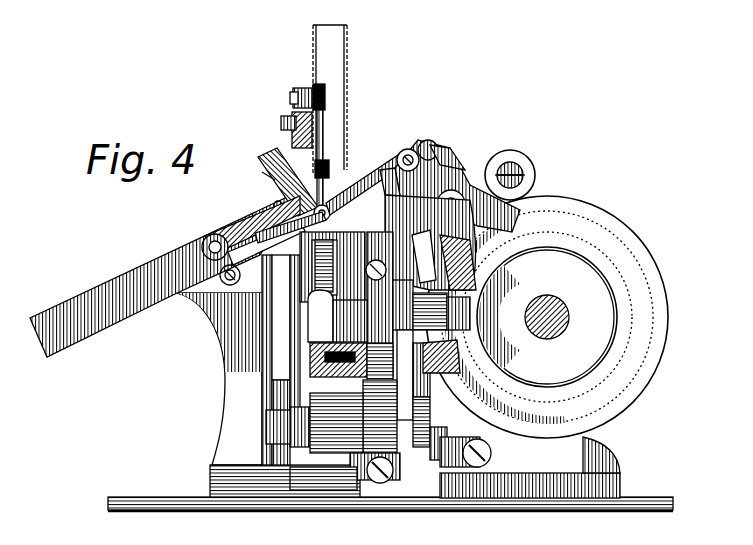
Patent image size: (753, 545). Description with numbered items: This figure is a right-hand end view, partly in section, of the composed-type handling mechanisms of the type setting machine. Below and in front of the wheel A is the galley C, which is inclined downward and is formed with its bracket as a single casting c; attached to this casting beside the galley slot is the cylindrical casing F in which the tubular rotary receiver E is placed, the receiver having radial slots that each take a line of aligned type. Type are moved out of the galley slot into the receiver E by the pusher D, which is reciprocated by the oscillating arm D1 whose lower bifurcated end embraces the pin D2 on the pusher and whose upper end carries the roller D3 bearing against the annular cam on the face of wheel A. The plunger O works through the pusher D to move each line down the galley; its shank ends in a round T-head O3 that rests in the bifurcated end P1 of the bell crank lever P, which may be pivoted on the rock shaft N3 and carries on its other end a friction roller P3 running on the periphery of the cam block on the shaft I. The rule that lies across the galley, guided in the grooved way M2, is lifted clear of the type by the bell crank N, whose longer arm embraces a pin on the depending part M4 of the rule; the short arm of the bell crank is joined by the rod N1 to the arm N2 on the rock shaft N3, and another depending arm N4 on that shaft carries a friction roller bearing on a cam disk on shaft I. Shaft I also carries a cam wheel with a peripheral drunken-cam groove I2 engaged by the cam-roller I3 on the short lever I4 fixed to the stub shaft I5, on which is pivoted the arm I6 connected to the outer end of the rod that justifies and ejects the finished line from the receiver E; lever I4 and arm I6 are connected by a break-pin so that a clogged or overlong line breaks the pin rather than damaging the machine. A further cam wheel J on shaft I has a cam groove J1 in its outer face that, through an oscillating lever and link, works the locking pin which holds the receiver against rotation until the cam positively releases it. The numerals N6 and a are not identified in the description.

The wheel A is at (336, 68).
The pusher D is at (320, 168).
The oscillating arm D1 is at (300, 107).
The pin D2 is at (300, 168).
The roller D3 is at (326, 98).
The galley C is at (165, 274).
The casting c is at (240, 330).
The cylindrical casing F is at (278, 204).
The bell crank N is at (245, 232).
The rod N1 is at (380, 170).
The arm N2 is at (476, 156).
The rock shaft N3 is at (503, 160).
The depending arm N4 is at (473, 229).
The spring N6 is at (302, 227).
The grooved way M2 is at (262, 172).
The depending part M4 is at (328, 210).
The plunger O is at (408, 149).
The round T-head O3 is at (430, 142).
The bell crank lever P is at (448, 404).
The bifurcated end P1 is at (440, 156).
The friction roller P3 is at (530, 174).
The receiver E is at (429, 242).
The screw a is at (367, 258).
The shaft I is at (667, 258).
The drunken-cam groove I2 is at (462, 262).
The cam-roller I3 is at (478, 318).
The short lever I4 is at (388, 391).
The stub shaft I5 is at (267, 418).
The arm I6 is at (337, 316).
The cam wheel J is at (362, 345).
The cam groove J1 is at (372, 484).